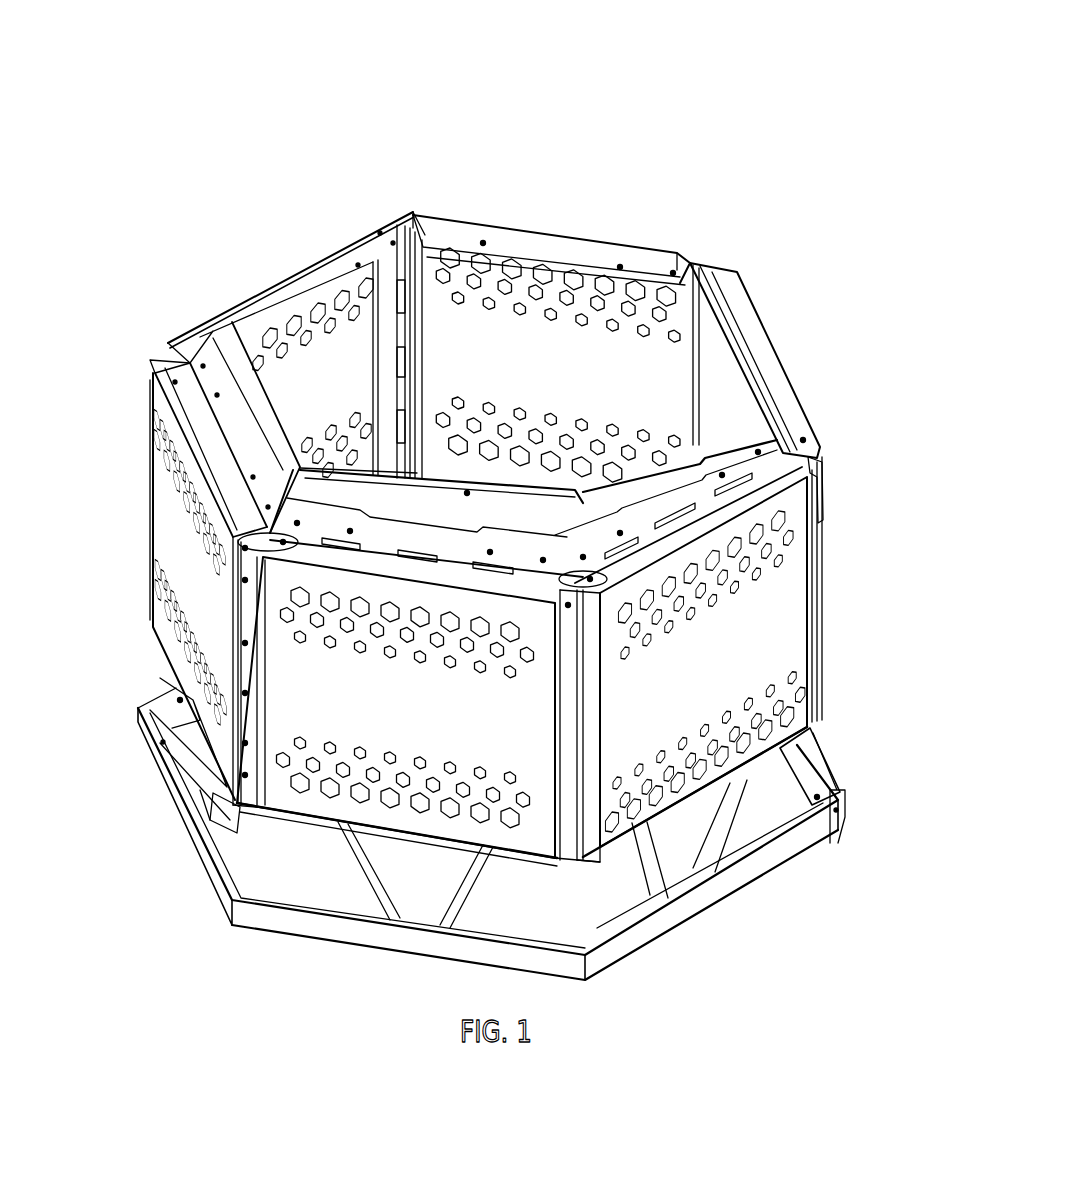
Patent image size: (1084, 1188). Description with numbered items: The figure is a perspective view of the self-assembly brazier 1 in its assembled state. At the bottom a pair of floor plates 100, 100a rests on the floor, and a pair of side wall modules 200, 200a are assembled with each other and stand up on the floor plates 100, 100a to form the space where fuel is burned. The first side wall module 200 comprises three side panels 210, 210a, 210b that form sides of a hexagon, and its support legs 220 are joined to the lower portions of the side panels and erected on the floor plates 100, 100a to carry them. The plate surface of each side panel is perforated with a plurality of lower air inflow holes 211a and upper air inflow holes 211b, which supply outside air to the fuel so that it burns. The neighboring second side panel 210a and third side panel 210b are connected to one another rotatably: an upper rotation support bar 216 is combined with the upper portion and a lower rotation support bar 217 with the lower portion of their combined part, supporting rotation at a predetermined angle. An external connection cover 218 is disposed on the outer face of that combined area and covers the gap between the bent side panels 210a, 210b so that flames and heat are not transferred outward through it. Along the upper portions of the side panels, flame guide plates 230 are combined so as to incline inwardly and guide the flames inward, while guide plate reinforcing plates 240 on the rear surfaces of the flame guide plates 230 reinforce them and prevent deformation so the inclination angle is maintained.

The self-assembly brazier 1 is at (735, 157).
The floor plate 100 is at (753, 836).
The floor plate 100a is at (768, 778).
The first side wall module 200 is at (197, 310).
The second side wall module 200a is at (780, 320).
The side panel 210 is at (170, 522).
The second side panel 210a is at (300, 685).
The third side panel 210b is at (768, 608).
The lower air inflow holes 211a is at (167, 598).
The upper air inflow holes 211b is at (163, 465).
The upper rotation support bar 216 is at (598, 560).
The lower rotation support bar 217 is at (592, 865).
The external connection cover 218 is at (583, 772).
The support leg 220 is at (232, 823).
The flame guide plate 230 is at (253, 400).
The guide plate reinforcing plate 240 is at (213, 423).